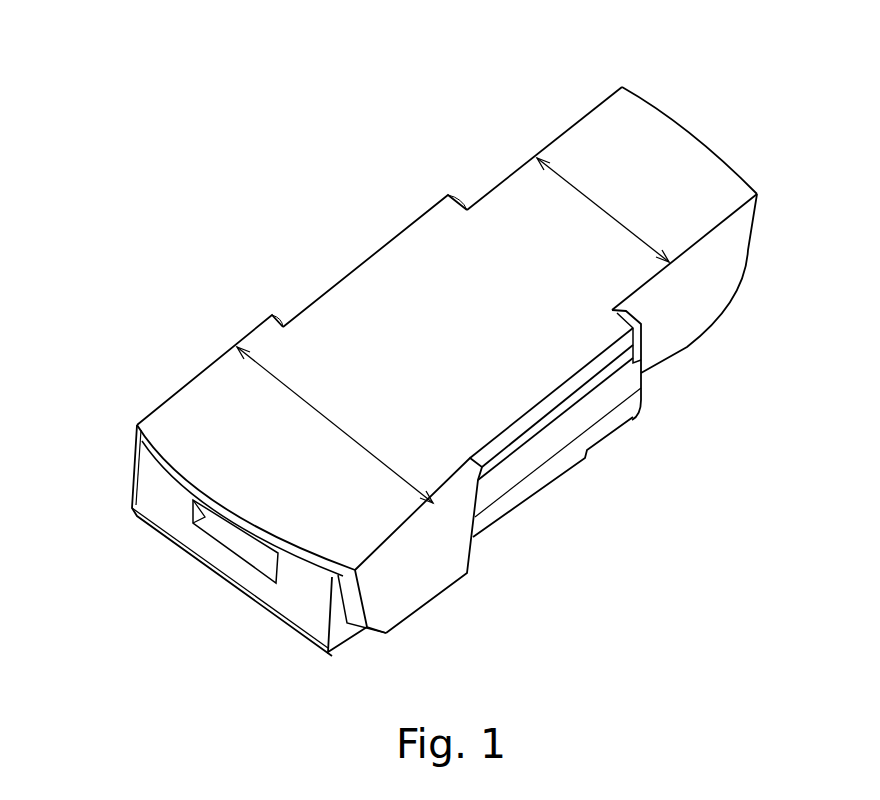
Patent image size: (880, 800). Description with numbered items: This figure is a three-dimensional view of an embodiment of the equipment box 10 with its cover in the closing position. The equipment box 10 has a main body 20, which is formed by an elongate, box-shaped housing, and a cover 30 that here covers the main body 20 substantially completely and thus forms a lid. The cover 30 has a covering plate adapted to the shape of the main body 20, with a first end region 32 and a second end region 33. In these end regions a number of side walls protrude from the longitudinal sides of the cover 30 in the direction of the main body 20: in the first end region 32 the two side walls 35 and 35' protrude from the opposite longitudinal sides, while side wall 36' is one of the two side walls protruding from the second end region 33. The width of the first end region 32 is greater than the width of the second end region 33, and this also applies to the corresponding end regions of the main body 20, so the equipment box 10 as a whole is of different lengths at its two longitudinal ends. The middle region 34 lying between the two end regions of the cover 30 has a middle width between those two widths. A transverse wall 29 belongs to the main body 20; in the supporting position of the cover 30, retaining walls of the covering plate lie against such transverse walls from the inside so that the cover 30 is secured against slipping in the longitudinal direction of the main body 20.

The equipment box 10 is at (439, 352).
The main body 20 is at (295, 598).
The transverse wall 29 is at (645, 329).
The cover 30 is at (707, 158).
The first end region 32 is at (217, 420).
The second end region 33 is at (592, 162).
The middle region 34 is at (428, 300).
The side wall 35 is at (190, 500).
The side wall 35' is at (450, 555).
The side wall 36' is at (747, 283).